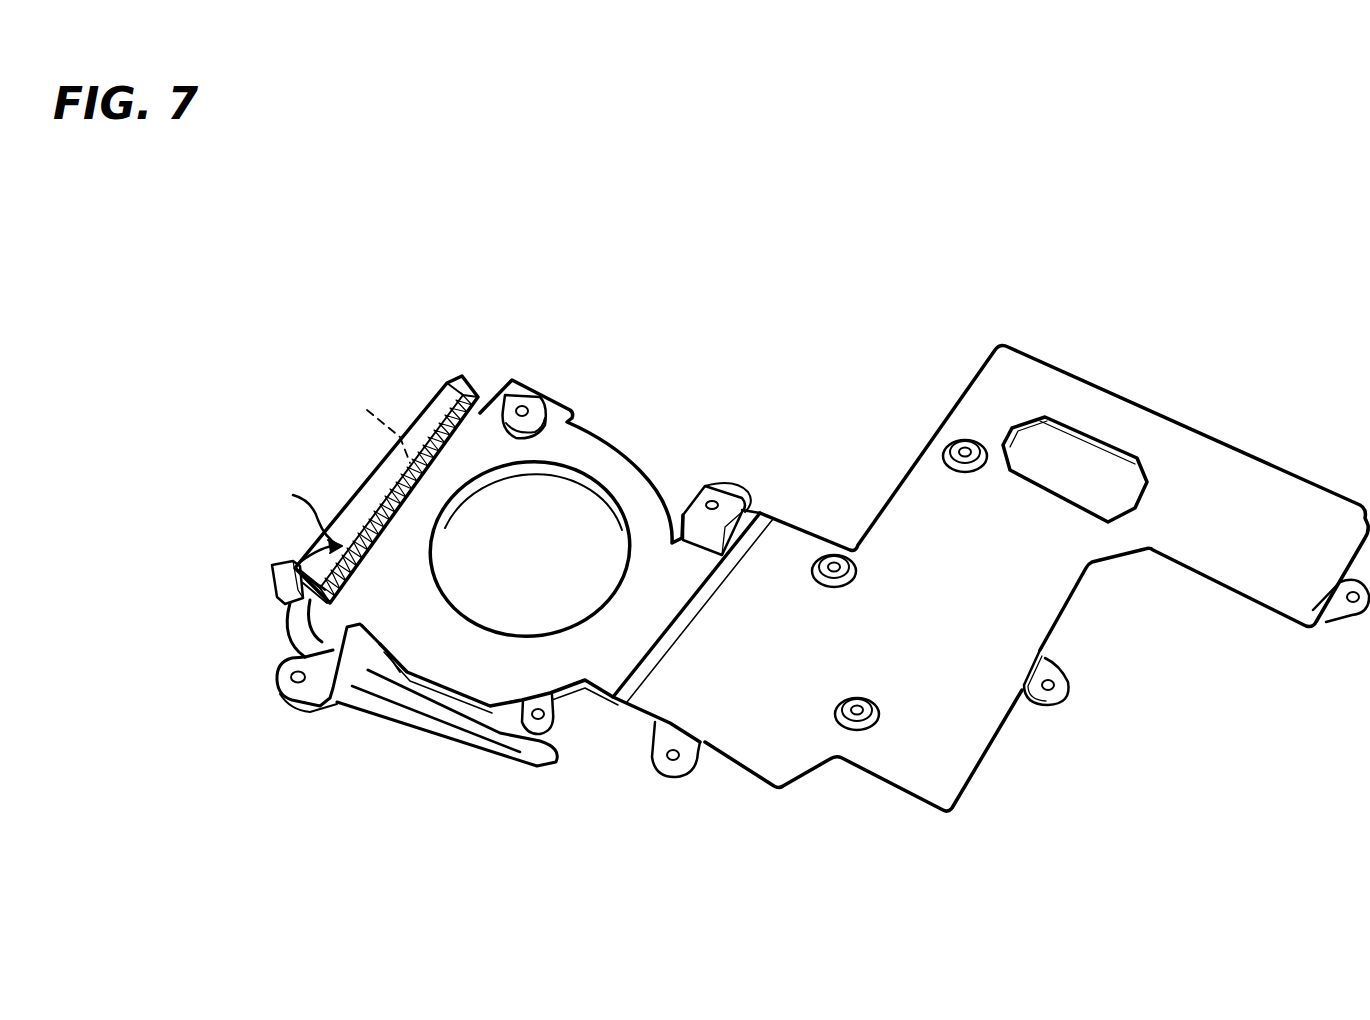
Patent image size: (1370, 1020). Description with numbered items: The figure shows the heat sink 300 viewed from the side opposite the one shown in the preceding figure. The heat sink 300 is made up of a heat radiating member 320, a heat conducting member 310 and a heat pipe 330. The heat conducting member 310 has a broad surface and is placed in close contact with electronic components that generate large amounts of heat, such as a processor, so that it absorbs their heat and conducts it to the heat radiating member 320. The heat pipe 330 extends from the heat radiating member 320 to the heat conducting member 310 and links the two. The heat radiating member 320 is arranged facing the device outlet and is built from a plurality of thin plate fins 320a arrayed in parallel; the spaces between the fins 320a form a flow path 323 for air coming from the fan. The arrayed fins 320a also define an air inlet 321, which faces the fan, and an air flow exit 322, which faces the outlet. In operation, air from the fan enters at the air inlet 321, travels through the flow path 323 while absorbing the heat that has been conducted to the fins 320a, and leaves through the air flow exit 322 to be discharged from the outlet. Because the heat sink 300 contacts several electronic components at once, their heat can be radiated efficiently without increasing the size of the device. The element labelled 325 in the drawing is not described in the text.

The heat sink 300 is at (1218, 378).
The heat conducting member 310 is at (923, 510).
The heat radiating member 320 is at (401, 439).
The fins 320a is at (455, 415).
The air inlet 321 is at (170, 536).
The air flow exit 322 is at (350, 490).
The flow path 323 is at (377, 414).
The fan housing 325 is at (551, 514).
The heat pipe 330 is at (568, 742).